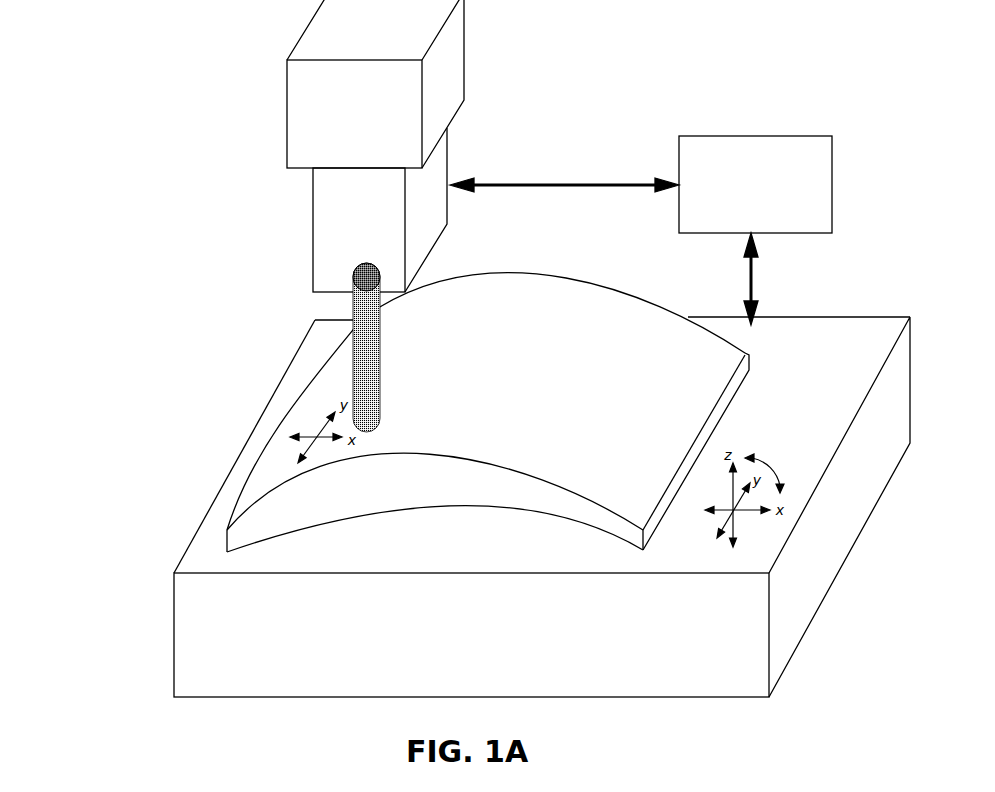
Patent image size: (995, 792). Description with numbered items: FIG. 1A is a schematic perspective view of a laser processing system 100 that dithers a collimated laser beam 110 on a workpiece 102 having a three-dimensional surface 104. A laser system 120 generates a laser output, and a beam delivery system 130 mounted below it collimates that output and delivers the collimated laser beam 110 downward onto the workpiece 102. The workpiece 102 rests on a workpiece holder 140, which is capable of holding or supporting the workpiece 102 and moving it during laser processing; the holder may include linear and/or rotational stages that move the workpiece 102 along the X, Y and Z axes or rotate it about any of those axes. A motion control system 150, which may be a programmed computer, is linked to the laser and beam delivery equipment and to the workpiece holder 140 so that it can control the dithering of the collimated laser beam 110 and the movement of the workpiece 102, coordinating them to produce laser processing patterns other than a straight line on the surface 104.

The laser processing system 100 is at (150, 187).
The workpiece 102 is at (516, 382).
The three-dimensional surface 104 is at (460, 292).
The collimated laser beam 110 is at (380, 335).
The laser system 120 is at (287, 115).
The beam delivery system 130 is at (313, 232).
The workpiece holder 140 is at (174, 637).
The motion control system 150 is at (752, 136).